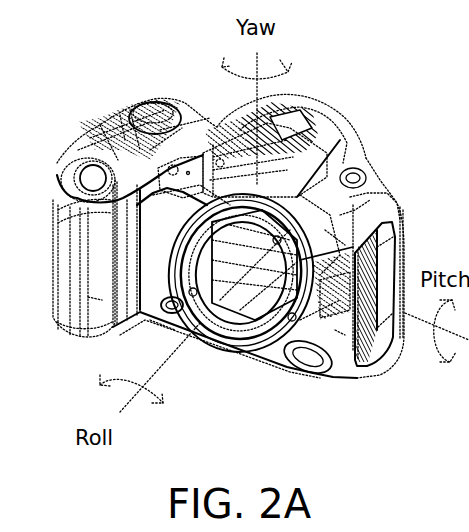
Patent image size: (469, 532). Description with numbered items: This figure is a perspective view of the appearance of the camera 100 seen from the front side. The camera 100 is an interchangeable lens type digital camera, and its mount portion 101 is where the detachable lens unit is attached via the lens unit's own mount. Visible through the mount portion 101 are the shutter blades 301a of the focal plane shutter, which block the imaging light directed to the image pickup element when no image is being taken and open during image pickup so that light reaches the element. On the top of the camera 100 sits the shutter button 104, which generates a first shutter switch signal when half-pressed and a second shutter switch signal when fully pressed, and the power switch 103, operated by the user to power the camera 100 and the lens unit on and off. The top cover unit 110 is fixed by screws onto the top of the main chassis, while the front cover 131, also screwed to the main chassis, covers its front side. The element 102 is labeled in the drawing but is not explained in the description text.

The camera body 100 is at (372, 373).
The lens release button 101 is at (280, 367).
The lens mount 102 is at (228, 352).
The strap lug 103 is at (368, 174).
The mode dial 104 is at (64, 162).
The viewfinder / image capturing unit 110 is at (241, 141).
The grip portion 131 is at (150, 260).
The operation button 301a is at (160, 333).